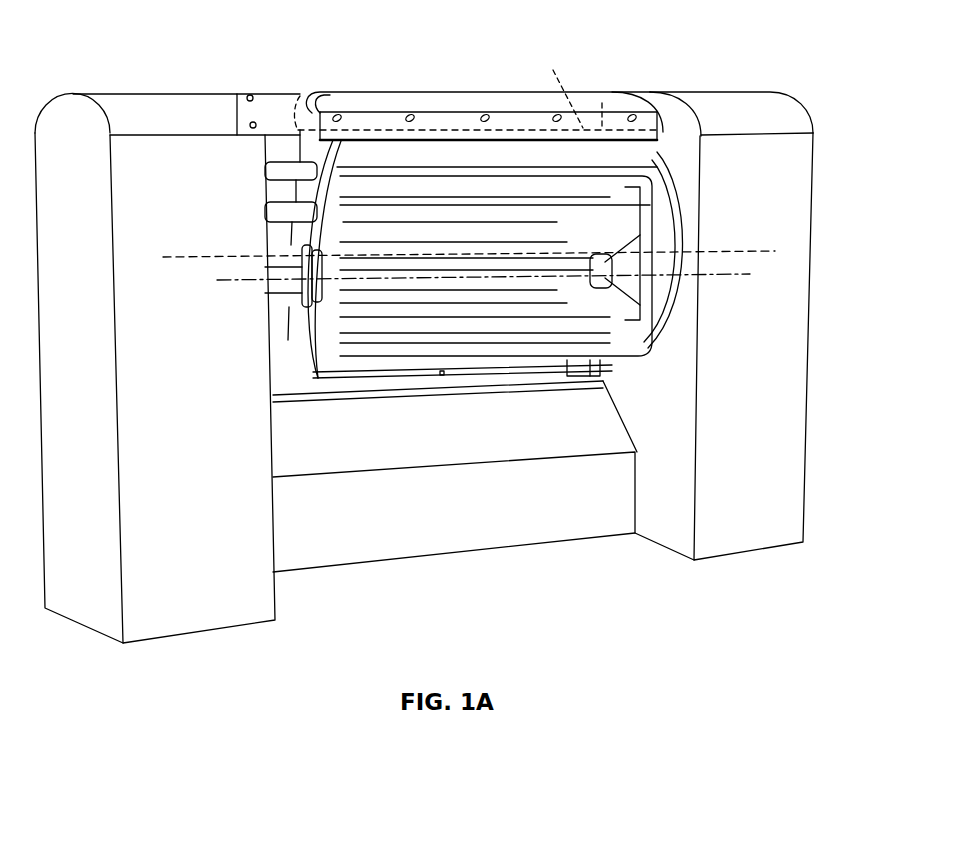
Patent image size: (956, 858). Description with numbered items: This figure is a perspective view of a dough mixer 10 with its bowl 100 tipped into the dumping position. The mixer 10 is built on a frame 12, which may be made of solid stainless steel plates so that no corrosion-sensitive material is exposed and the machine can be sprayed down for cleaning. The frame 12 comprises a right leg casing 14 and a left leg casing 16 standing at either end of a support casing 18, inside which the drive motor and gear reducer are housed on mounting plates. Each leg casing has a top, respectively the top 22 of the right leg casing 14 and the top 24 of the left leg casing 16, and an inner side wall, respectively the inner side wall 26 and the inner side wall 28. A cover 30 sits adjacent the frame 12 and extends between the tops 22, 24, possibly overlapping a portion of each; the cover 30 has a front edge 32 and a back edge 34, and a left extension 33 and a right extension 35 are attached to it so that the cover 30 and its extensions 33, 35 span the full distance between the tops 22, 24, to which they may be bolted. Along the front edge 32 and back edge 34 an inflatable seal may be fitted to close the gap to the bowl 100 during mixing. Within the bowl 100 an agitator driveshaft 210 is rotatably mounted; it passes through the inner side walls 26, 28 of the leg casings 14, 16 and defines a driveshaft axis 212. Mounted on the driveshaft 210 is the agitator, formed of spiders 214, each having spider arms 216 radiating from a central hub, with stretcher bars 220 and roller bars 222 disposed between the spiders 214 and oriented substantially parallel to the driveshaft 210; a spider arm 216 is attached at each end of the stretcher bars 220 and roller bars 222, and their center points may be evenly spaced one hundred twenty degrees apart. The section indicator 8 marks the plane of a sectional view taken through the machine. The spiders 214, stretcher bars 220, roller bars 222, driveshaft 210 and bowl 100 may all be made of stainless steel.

The mixer 10 is at (118, 36).
The frame 12 is at (808, 428).
The right leg casing 14 is at (795, 192).
The left leg casing 16 is at (135, 237).
The support casing 18 is at (476, 552).
The top of right leg casing 22 is at (773, 101).
The top of left leg casing 24 is at (152, 98).
The inner side wall of right leg casing 26 is at (660, 398).
The inner side wall of left leg casing 28 is at (275, 415).
The cover 30 is at (585, 100).
The front edge 32 is at (385, 143).
The left extension 33 is at (272, 103).
The back edge 34 is at (570, 86).
The right extension 35 is at (658, 98).
The section line 8 is at (163, 257).
The bowl 100 is at (313, 337).
The agitator driveshaft 210 is at (445, 315).
The driveshaft axis 212 is at (240, 270).
The spider 214 is at (648, 322).
The spider arm 216 is at (632, 222).
The stretcher bar 220 is at (440, 240).
The roller bar 222 is at (420, 210).